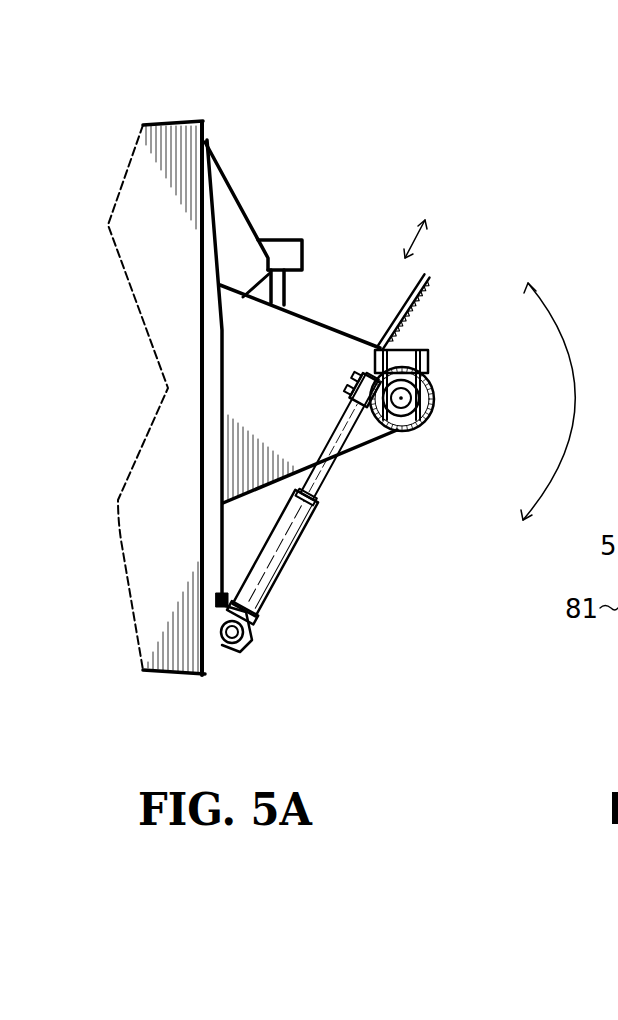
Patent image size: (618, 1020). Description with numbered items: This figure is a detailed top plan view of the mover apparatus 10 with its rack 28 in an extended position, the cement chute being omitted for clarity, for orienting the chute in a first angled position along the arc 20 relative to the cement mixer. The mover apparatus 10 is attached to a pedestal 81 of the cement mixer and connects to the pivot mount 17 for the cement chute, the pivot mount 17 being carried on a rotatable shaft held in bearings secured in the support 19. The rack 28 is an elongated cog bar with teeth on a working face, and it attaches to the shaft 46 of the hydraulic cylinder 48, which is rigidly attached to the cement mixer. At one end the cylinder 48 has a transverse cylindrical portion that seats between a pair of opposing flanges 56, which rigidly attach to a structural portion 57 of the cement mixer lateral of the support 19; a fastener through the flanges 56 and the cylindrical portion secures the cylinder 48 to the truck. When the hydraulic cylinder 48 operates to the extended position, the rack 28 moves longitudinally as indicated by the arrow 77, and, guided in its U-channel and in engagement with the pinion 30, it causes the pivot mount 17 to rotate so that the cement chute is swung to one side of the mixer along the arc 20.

The mover apparatus 10 is at (437, 262).
The pivot mount 17 is at (400, 347).
The support 19 is at (295, 332).
The arc 20 is at (573, 380).
The rack 28 is at (405, 290).
The pinion 30 is at (440, 400).
The shaft of hydraulic cylinder 46 is at (342, 445).
The hydraulic cylinder 48 is at (300, 540).
The flanges 56 is at (245, 640).
The structural portion 57 is at (222, 560).
The arrow 77 is at (420, 240).
The pedestal 81 is at (158, 425).